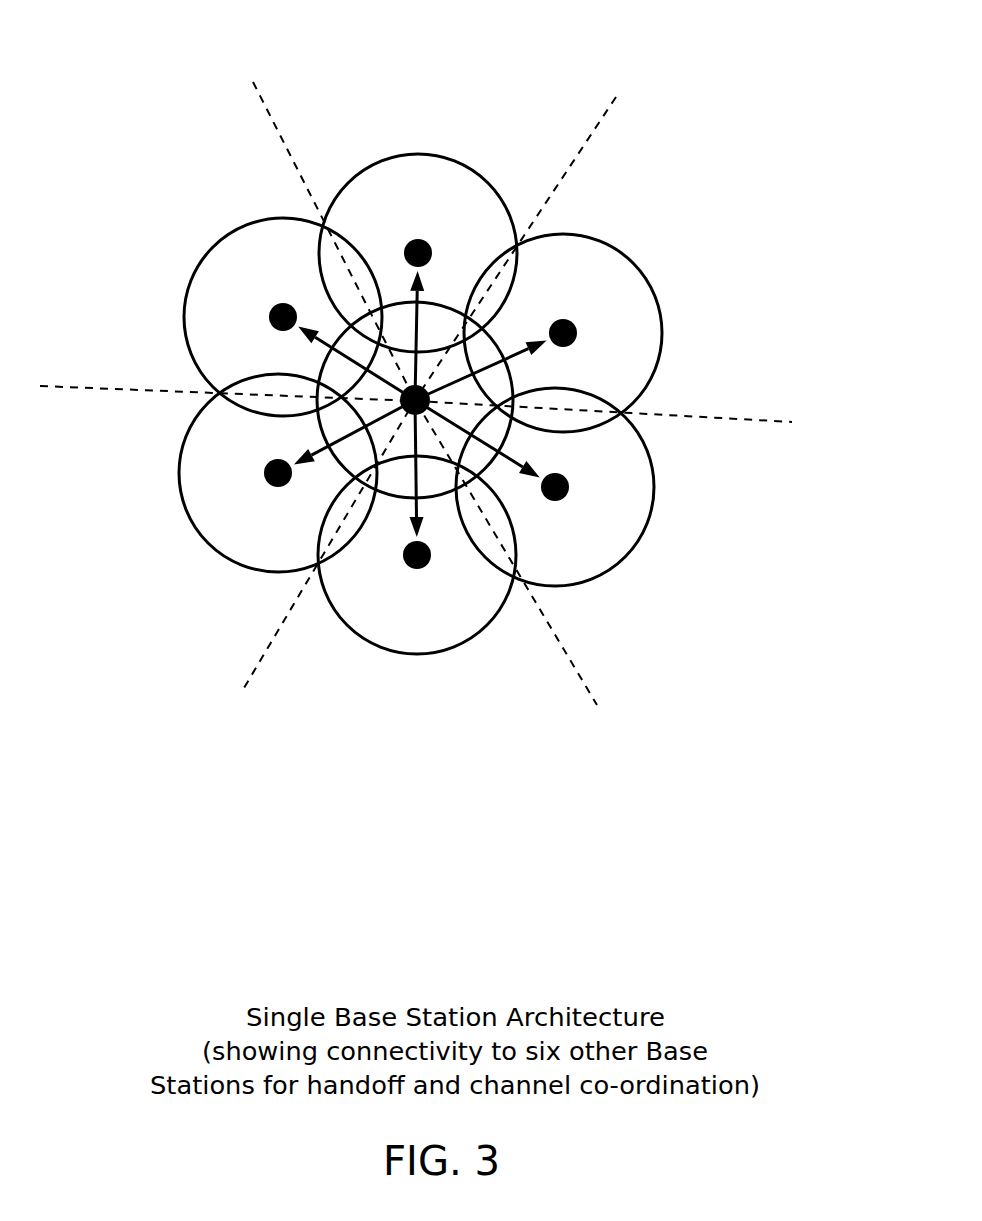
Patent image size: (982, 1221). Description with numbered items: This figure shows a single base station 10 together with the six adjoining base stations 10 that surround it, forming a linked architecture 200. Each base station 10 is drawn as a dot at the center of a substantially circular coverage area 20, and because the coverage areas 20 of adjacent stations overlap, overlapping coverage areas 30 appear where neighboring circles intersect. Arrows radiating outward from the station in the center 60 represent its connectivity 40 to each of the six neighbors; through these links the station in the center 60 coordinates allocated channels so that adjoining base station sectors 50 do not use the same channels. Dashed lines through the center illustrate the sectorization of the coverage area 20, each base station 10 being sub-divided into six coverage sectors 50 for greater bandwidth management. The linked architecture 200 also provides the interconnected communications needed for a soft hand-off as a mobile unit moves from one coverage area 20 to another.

The base station 10 is at (408, 568).
The coverage area 20 is at (420, 153).
The overlapping coverage area 30 is at (339, 290).
The connectivity 40 is at (415, 400).
The coverage sector 50 is at (580, 328).
The station in the center 60 is at (415, 400).
The linked architecture 200 is at (512, 63).